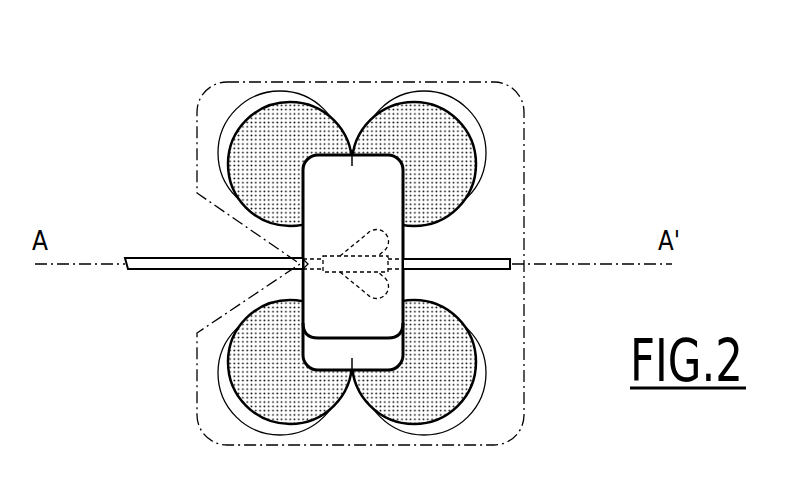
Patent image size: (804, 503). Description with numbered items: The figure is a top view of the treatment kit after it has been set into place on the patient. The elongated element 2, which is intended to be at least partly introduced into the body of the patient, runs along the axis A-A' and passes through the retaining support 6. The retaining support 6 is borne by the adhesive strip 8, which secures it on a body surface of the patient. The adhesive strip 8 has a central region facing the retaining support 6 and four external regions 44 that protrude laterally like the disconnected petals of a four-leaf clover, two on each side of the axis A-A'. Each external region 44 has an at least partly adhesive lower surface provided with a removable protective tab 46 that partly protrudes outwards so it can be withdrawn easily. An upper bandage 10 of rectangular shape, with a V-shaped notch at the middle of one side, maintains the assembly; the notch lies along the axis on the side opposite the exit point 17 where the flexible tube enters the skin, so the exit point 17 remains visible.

The elongated element 2 is at (156, 257).
The retaining support 6 is at (335, 163).
The adhesive strip 8 is at (385, 127).
The upper bandage 10 is at (493, 107).
The exit point 17 is at (507, 248).
The external region 44 is at (270, 127).
The removable protective tab 46 is at (229, 136).